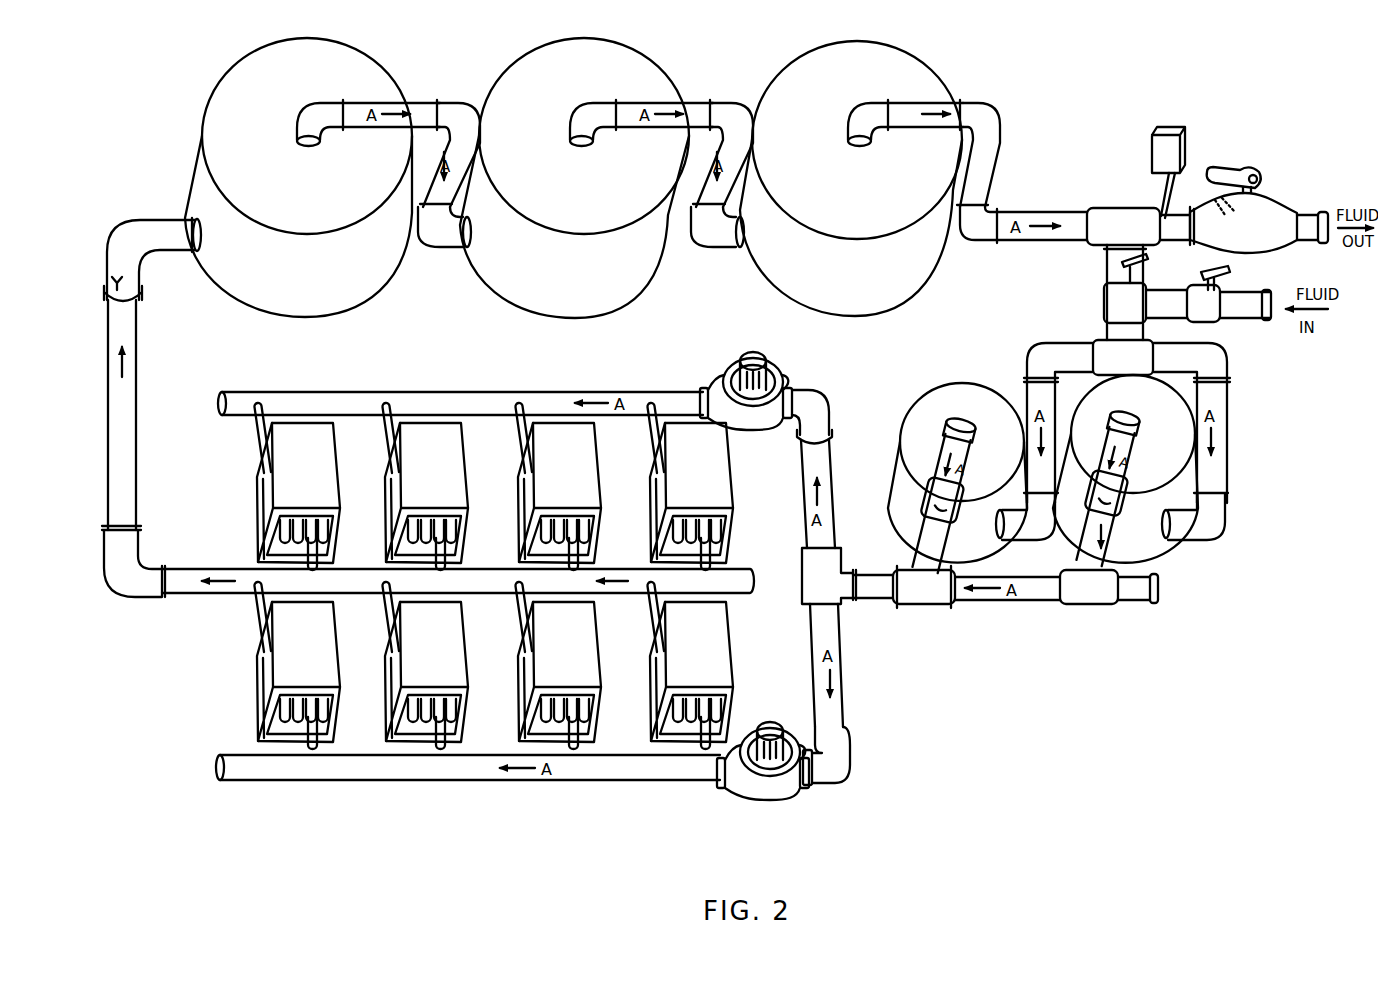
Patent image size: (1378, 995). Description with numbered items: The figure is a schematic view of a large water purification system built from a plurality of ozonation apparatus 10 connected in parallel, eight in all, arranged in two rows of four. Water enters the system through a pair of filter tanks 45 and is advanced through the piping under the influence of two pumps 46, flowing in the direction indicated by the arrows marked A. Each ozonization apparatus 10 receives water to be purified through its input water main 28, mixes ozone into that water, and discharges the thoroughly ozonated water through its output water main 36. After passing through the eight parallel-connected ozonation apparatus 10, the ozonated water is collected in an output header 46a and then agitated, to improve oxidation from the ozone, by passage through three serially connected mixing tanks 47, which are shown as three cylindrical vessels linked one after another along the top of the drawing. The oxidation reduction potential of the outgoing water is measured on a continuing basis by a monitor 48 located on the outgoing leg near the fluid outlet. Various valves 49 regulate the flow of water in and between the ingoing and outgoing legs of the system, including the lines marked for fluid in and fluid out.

The ozonization apparatus 10 is at (244, 495).
The input water main 28 is at (256, 420).
The output water main 36 is at (321, 561).
The filter tank 45 is at (945, 403).
The pump 46 is at (716, 363).
The output header 46a is at (187, 592).
The mixing tank 47 is at (320, 65).
The monitor 48 is at (1164, 130).
The valve 49 is at (1263, 207).